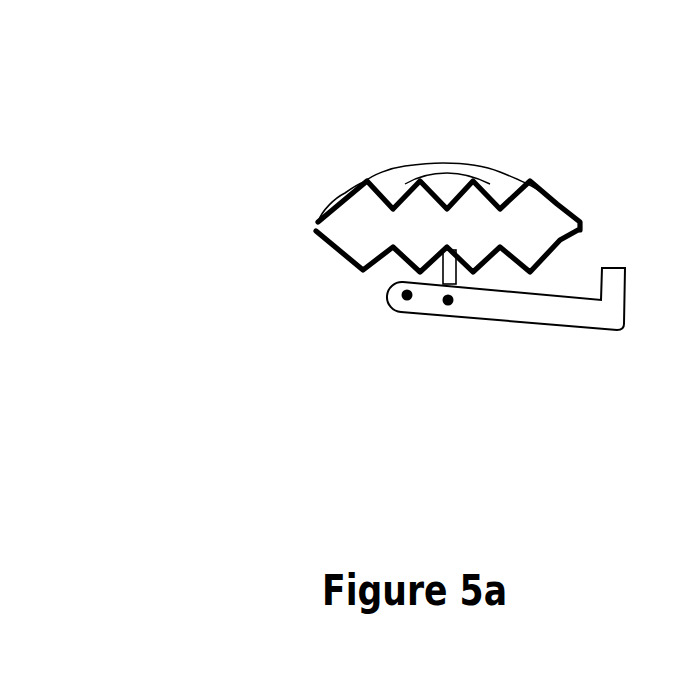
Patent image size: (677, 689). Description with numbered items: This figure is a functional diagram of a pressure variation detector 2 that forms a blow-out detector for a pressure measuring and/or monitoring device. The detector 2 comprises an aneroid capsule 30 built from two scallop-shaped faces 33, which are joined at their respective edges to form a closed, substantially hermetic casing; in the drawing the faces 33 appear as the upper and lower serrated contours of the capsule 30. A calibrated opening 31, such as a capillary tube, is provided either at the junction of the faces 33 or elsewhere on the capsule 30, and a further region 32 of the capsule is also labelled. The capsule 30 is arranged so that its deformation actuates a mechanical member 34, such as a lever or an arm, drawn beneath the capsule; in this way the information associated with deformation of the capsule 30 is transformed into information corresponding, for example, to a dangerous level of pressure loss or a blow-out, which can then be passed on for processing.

The pressure variation detector 2 is at (347, 236).
The aneroid capsule 30 is at (388, 182).
The calibrated opening 31 is at (317, 227).
The intermediate body 32 is at (487, 230).
The scallop-shaped faces 33 is at (497, 182).
The mechanical member 34 is at (510, 307).